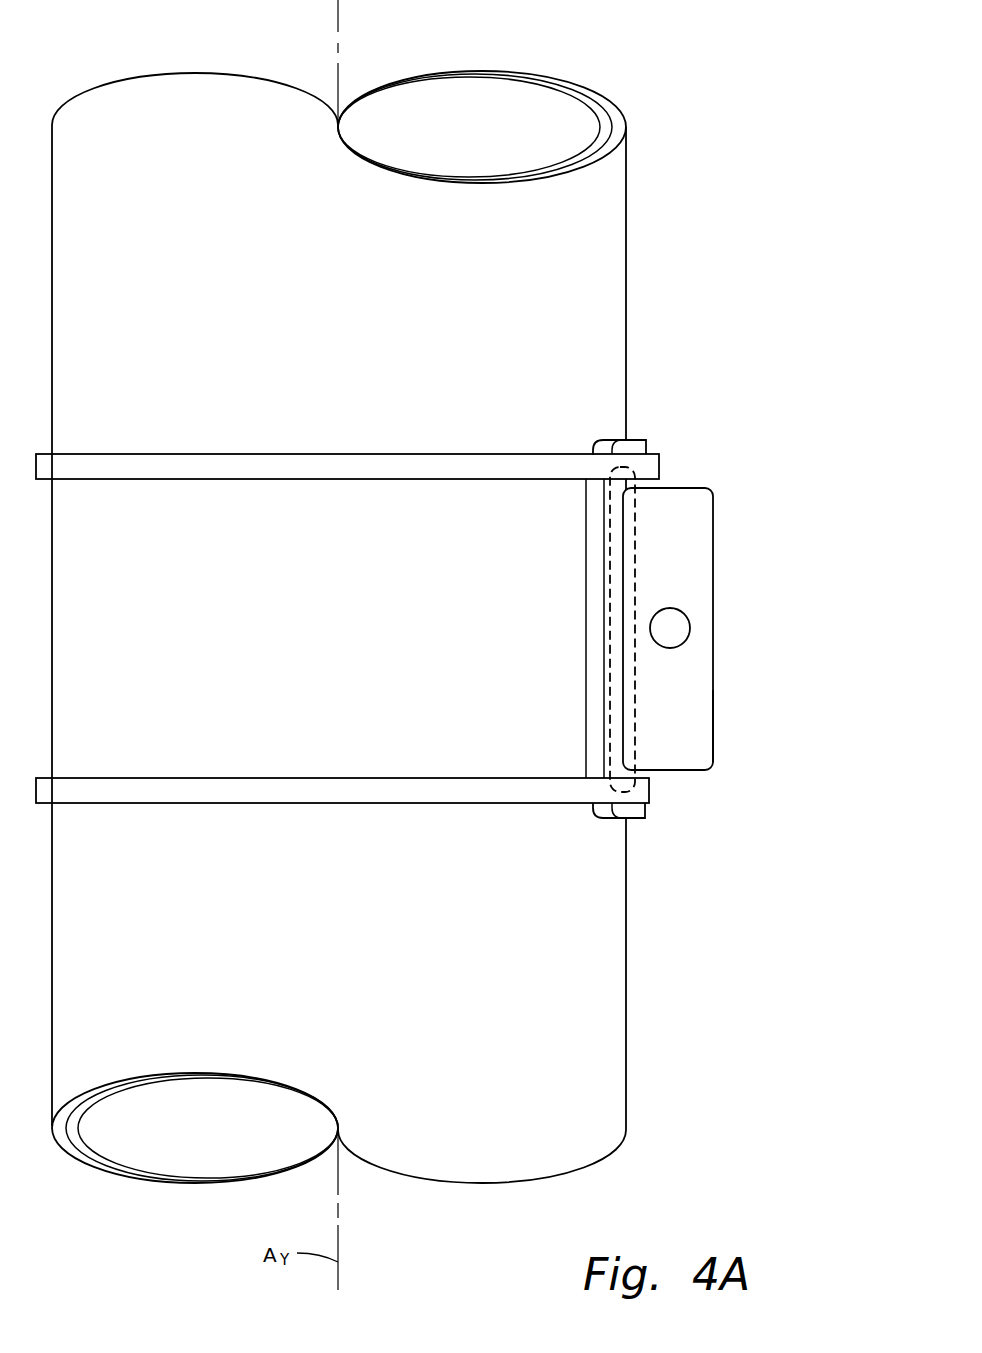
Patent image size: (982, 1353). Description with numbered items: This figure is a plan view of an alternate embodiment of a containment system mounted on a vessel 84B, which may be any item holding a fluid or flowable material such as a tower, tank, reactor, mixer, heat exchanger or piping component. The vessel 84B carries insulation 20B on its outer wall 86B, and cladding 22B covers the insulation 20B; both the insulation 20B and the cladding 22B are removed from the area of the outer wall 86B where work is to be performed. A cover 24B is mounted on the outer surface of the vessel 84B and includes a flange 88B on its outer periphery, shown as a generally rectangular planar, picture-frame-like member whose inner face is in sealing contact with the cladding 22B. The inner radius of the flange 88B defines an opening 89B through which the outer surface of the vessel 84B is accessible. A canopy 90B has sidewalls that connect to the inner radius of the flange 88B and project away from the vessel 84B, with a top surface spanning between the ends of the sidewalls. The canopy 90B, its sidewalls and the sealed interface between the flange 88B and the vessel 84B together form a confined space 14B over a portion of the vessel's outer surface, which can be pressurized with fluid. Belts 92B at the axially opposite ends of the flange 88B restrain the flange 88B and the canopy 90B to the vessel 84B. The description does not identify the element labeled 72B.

The vessel 84B is at (398, 604).
The cladding 22B is at (572, 83).
The insulation 20B is at (607, 112).
The outer wall 86B is at (573, 158).
The belts 92B is at (342, 803).
The flange 88B is at (639, 446).
The cover 24B is at (659, 629).
The opening 89B is at (580, 596).
The confined space 14B is at (697, 503).
The hole 72B is at (688, 617).
The canopy 90B is at (713, 751).